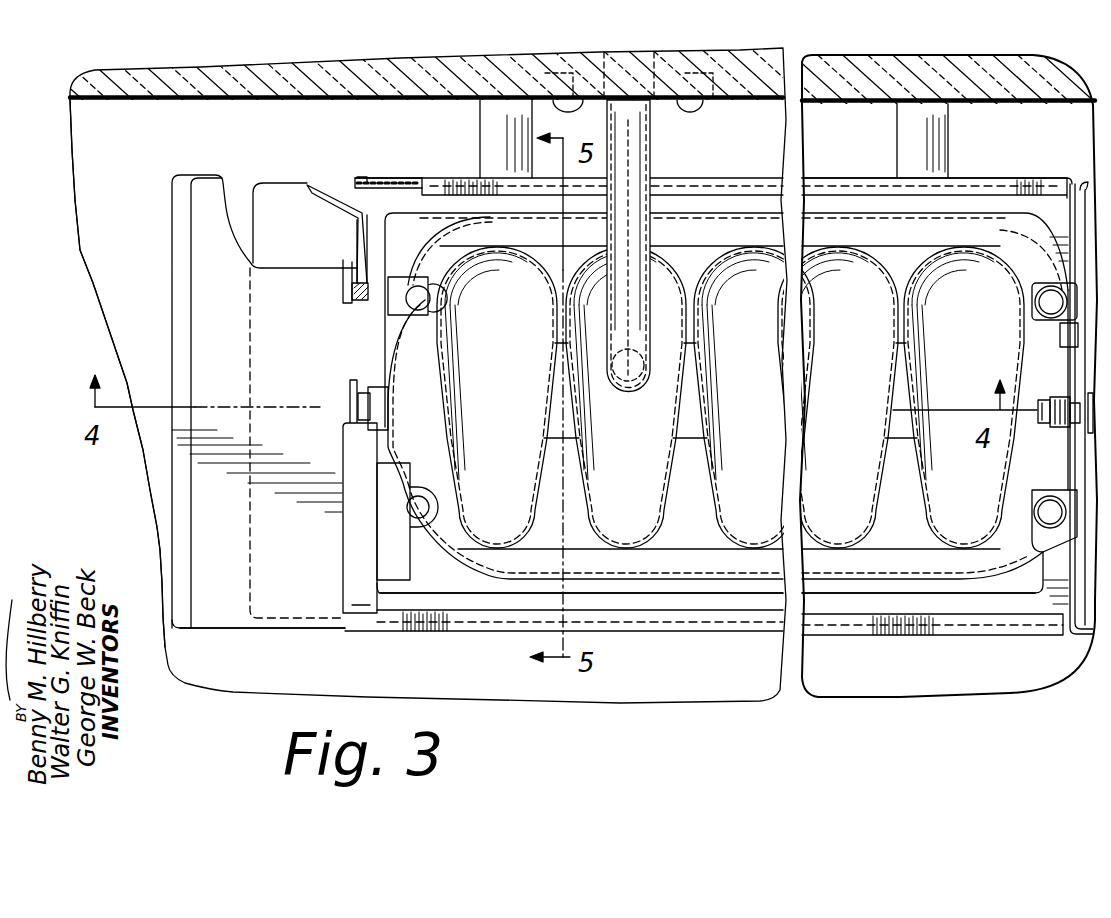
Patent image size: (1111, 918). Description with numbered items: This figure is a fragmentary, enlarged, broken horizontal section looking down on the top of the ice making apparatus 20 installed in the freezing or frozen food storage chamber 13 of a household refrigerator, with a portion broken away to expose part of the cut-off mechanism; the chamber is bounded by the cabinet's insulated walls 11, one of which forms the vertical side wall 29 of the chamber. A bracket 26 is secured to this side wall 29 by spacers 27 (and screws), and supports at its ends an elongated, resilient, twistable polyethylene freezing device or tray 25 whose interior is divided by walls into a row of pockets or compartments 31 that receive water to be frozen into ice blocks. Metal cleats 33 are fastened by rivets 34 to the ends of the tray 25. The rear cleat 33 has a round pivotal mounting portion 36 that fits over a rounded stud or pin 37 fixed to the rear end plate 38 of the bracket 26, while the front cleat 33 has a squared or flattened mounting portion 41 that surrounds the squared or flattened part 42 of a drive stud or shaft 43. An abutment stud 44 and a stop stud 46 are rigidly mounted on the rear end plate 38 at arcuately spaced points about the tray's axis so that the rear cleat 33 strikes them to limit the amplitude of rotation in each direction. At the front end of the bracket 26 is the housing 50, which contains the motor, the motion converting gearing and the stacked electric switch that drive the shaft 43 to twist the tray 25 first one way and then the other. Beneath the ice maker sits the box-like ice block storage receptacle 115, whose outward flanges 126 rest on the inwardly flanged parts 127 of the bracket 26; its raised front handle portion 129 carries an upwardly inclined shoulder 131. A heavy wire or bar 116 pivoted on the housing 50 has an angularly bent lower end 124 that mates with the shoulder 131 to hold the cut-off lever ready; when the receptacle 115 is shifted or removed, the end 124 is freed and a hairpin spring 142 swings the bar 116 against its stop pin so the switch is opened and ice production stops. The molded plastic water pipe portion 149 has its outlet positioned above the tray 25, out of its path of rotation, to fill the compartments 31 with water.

The insulated walls 11 is at (270, 65).
The freezing or frozen food storage chamber 13 is at (182, 141).
The lighting fixture 20 is at (70, 117).
The freezing device, mold or tray 25 is at (695, 565).
The bracket 26 is at (987, 183).
The spacers 27 is at (488, 113).
The vertical side wall 29 is at (113, 100).
The pockets or compartments 31 is at (533, 402).
The metal cleats 33 is at (392, 362).
The rivets 34 is at (422, 300).
The round pivotal mounting portion 36 is at (1058, 396).
The rounded stud or pin 37 is at (1042, 404).
The rear end plate of bracket 38 is at (1082, 180).
The squared or flattened mounting portion 41 is at (382, 418).
The squared or flattened part of drive stud or shaft 42 is at (372, 403).
The drive stud or shaft 43 is at (372, 388).
The abutment stud 44 is at (1060, 333).
The stop stud 46 is at (1072, 416).
The housing 50 is at (305, 628).
The ice block storage receptacle 115 is at (403, 186).
The heavy round wire or bar 116 is at (358, 245).
The angularly bent lower end part of bar 124 is at (325, 200).
The outward flanges of receptacle 126 is at (447, 205).
The inwardly flanged parts of bracket 127 is at (352, 180).
The handle portion 129 is at (262, 205).
The upwardly inclined shoulder 131 is at (383, 232).
The hairpin spring 142 is at (350, 270).
The nonmetallic molded plastic pipe portion 149 is at (640, 152).